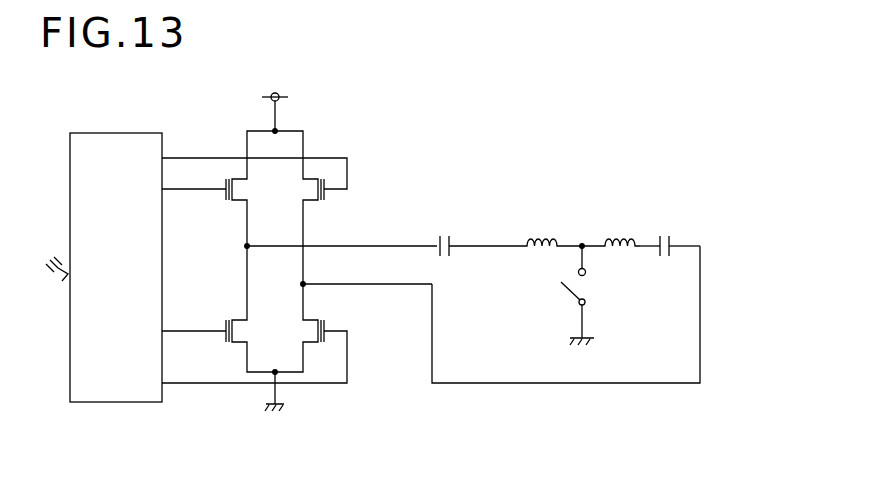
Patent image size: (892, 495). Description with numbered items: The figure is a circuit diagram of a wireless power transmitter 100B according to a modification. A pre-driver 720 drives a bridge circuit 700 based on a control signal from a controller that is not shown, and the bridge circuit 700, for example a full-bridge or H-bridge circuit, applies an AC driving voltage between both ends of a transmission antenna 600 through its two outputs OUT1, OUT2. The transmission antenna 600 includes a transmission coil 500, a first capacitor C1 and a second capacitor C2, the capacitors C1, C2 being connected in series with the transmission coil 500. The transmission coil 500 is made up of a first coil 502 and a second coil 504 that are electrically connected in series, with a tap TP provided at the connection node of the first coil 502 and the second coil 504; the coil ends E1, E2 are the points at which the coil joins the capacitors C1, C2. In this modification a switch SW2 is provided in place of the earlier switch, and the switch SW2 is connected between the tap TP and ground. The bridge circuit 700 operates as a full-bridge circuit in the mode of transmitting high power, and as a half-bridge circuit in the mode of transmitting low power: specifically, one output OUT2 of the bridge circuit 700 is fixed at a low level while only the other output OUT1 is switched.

The wireless power transmitter 100B is at (693, 78).
The pre-driver 720 is at (113, 402).
The bridge circuit 700 is at (352, 425).
The transmission coil 500 is at (579, 195).
The first coil 502 is at (541, 231).
The second coil 504 is at (620, 213).
The transmission antenna 600 is at (566, 299).
The first capacitor C1 is at (443, 233).
The second capacitor C2 is at (672, 233).
The tap TP is at (583, 240).
The switch SW2 is at (558, 297).
The first end E1 is at (515, 248).
The second end E2 is at (644, 248).
The output OUT1 is at (341, 238).
The output OUT2 is at (366, 277).